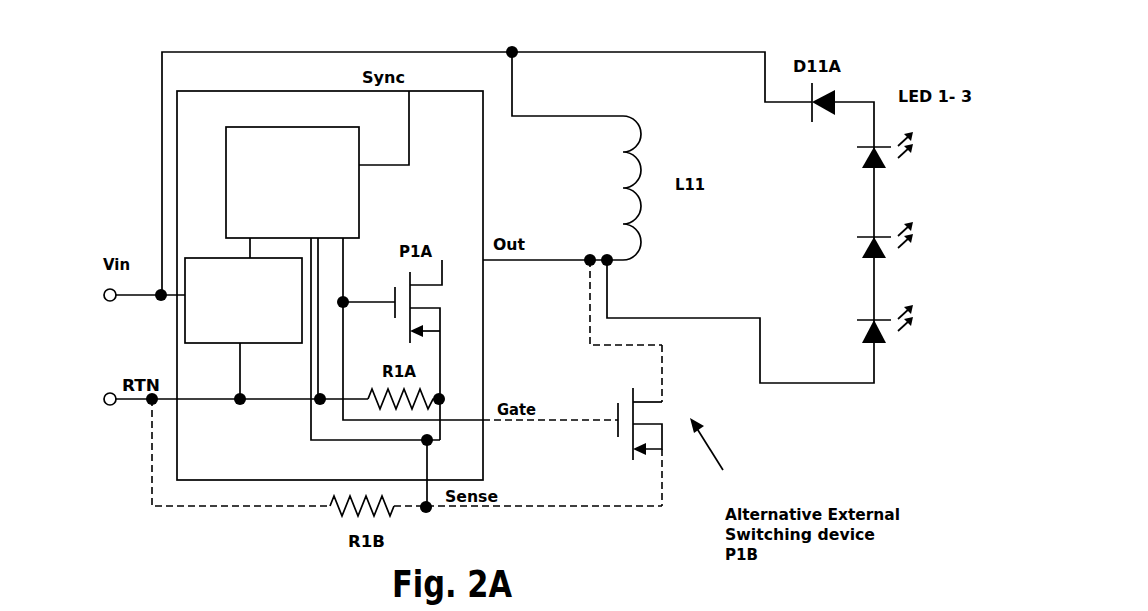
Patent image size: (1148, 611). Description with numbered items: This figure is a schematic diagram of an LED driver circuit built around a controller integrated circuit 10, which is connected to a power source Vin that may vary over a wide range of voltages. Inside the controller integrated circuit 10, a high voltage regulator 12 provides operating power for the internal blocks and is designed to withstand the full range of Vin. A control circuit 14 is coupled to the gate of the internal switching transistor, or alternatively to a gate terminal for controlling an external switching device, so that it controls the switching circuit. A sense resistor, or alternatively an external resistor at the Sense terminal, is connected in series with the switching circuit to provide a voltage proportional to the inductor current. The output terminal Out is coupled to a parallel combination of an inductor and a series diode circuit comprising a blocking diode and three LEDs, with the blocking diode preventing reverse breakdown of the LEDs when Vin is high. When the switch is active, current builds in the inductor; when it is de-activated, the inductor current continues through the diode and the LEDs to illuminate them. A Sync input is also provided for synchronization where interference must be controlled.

The controller integrated circuit 10 is at (331, 120).
The high voltage regulator 12 is at (218, 330).
The control circuit 14 is at (259, 199).